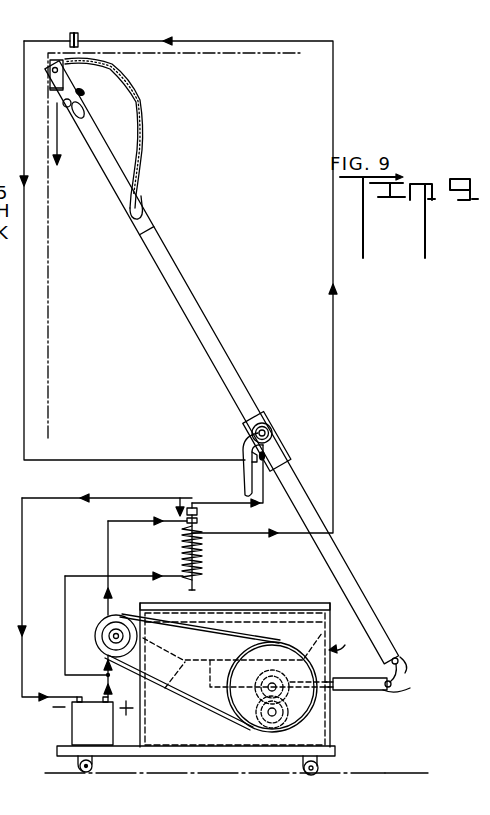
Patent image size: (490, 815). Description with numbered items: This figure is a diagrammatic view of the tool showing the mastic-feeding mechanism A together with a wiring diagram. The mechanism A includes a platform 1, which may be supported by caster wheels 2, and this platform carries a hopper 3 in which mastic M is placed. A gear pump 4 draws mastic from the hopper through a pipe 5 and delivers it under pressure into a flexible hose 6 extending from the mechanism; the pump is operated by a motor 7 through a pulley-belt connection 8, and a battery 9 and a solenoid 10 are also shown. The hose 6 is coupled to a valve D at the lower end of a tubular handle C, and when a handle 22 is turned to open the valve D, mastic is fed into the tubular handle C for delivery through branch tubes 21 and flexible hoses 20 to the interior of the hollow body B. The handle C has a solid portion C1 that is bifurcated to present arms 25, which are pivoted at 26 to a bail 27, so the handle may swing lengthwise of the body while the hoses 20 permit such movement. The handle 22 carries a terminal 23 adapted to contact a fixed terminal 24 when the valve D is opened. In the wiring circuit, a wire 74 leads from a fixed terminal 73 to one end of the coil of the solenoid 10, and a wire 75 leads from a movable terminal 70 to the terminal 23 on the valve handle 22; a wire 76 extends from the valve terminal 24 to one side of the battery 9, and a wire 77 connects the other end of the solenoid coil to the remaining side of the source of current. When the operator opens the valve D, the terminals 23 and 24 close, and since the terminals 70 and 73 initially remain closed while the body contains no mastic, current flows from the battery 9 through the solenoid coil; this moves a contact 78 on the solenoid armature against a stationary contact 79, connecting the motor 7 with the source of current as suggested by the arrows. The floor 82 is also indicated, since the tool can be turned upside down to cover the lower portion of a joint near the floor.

The platform 1 is at (195, 773).
The caster wheels 2 is at (88, 773).
The hopper 3 is at (165, 686).
The gear pump 4 is at (290, 713).
The pipe 5 is at (193, 706).
The flexible hose 6 is at (374, 674).
The motor 7 is at (95, 643).
The pulley-belt connection 8 is at (230, 607).
The battery 9 is at (99, 732).
The solenoid 10 is at (203, 557).
The flexible hoses 20 is at (142, 133).
The branch tubes 21 is at (140, 212).
The handle 22 is at (243, 477).
The terminal 23 is at (251, 455).
The fixed terminal 24 is at (280, 445).
The arms 25 is at (84, 110).
The pivot 26 is at (84, 91).
The bail 27 is at (62, 95).
The electrical terminal 70 is at (71, 33).
The terminal 73 is at (82, 35).
The wire 74 is at (238, 43).
The wire 75 is at (22, 352).
The wire 76 is at (114, 497).
The wire 77 is at (65, 622).
The contact 78 is at (197, 522).
The stationary contact 79 is at (197, 512).
The floor 82 is at (400, 773).
The mastic-feeding mechanism A is at (344, 638).
The hollow body B is at (42, 77).
The tubular handle C is at (217, 340).
The solid portion C1 is at (113, 190).
The valve D is at (280, 424).
The mastic M is at (277, 607).